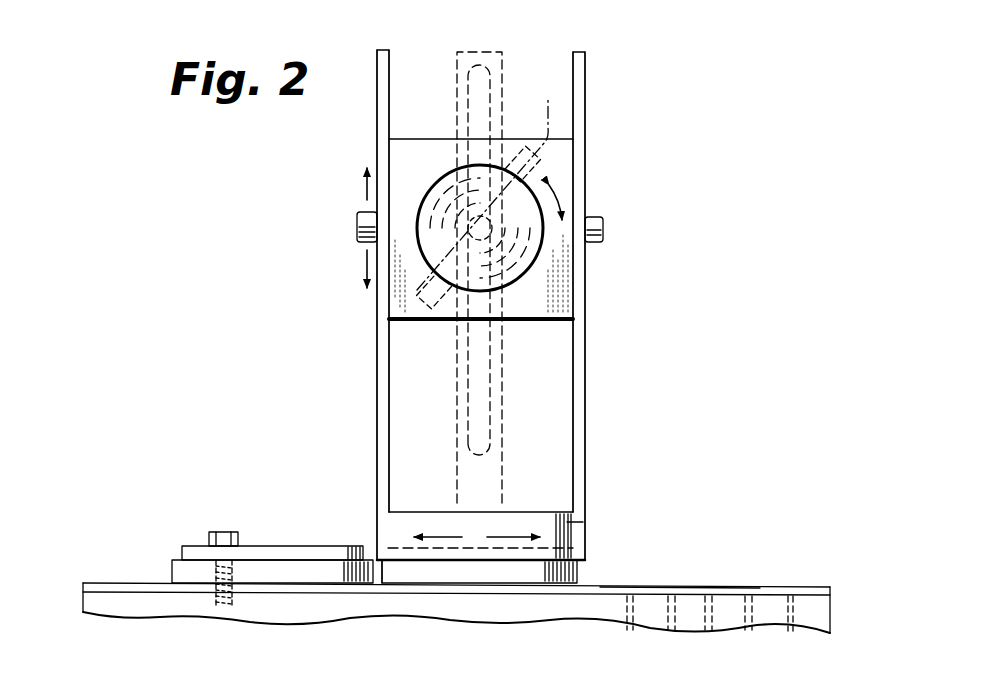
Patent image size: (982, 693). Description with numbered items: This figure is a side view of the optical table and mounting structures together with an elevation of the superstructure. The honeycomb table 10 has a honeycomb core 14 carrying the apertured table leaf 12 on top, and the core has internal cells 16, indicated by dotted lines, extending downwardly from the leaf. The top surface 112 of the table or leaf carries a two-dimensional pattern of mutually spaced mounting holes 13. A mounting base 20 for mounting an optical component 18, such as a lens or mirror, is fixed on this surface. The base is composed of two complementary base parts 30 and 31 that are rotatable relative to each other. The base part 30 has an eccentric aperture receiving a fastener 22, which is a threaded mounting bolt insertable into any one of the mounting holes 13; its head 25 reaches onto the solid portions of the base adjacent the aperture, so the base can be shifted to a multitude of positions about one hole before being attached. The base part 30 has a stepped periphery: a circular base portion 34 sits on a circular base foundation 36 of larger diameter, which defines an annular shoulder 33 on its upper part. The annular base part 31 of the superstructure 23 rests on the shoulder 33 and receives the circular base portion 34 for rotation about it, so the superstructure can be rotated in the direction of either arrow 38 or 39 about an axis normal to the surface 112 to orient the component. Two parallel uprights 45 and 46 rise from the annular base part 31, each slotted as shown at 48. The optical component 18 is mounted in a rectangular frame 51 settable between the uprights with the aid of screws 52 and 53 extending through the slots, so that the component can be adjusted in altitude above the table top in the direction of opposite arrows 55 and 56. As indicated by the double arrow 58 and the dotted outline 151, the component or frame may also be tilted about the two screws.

The honeycomb table 10 is at (78, 603).
The apertured table leaf 12 is at (117, 582).
The mounting holes 13 is at (208, 587).
The honeycomb core 14 is at (832, 606).
The internal cells 16 is at (745, 612).
The optical component 18 is at (447, 176).
The mounting base 20 is at (588, 567).
The fastener 22 is at (246, 575).
The superstructure 23 is at (374, 445).
The bolt head 25 is at (230, 530).
The base part 30 is at (170, 557).
The annular base part 31 is at (573, 522).
The shoulder 33 is at (307, 547).
The circular base portion 34 is at (174, 546).
The circular base foundation 36 is at (407, 578).
The rotation arrow 38 is at (437, 534).
The rotation arrow 39 is at (526, 536).
The upright 45 is at (392, 390).
The upright 46 is at (586, 396).
The slot 48 is at (470, 103).
The rectangular frame 51 is at (562, 298).
The screw 52 is at (357, 226).
The screw 53 is at (604, 228).
The altitude adjustment arrow 55 is at (366, 278).
The altitude adjustment arrow 56 is at (366, 182).
The double arrow 58 is at (562, 195).
The top surface 112 is at (672, 586).
The dotted outline 151 is at (496, 190).